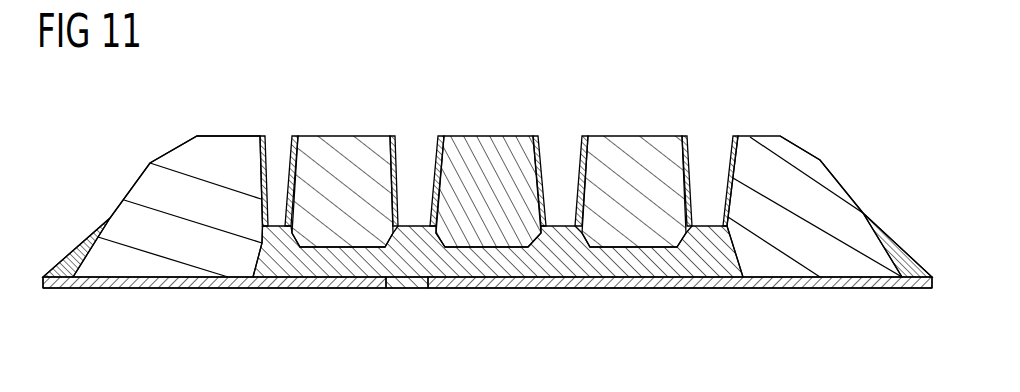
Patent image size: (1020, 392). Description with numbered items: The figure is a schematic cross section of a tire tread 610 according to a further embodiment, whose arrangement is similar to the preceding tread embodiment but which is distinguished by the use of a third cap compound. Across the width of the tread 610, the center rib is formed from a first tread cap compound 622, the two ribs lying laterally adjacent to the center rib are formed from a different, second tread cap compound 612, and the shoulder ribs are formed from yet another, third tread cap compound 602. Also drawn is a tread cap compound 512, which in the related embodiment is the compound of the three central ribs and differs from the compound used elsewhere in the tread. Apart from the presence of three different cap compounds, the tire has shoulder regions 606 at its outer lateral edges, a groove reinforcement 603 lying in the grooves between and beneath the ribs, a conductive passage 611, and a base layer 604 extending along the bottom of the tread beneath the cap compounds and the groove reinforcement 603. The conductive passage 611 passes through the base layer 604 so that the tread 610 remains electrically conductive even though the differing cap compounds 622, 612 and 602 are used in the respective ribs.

The shoulder regions 606 is at (128, 158).
The third tread cap compound 602 is at (212, 157).
The second tread cap compound 612 is at (367, 153).
The first tread cap compound 622 is at (497, 148).
The tread cap compound 512 is at (602, 152).
The tread 610 is at (734, 121).
The groove reinforcement 603 is at (270, 258).
The conductive passage 611 is at (403, 288).
The base layer 604 is at (780, 281).